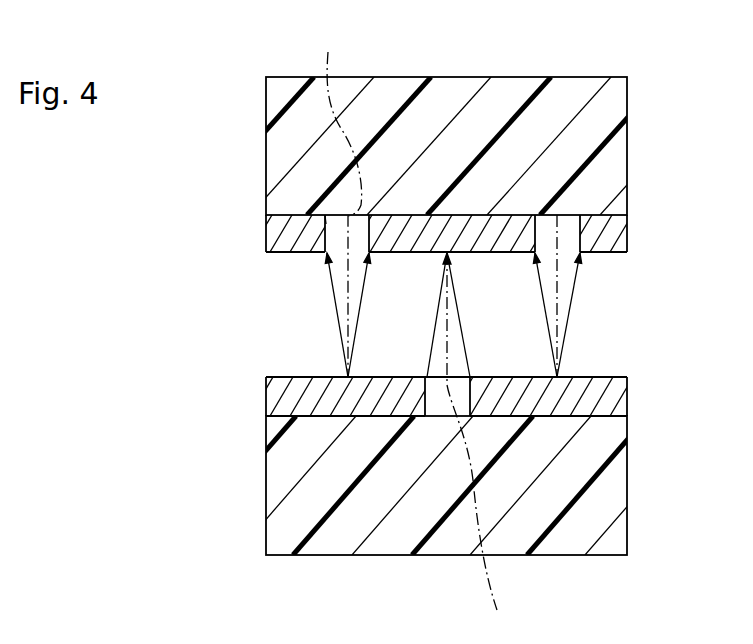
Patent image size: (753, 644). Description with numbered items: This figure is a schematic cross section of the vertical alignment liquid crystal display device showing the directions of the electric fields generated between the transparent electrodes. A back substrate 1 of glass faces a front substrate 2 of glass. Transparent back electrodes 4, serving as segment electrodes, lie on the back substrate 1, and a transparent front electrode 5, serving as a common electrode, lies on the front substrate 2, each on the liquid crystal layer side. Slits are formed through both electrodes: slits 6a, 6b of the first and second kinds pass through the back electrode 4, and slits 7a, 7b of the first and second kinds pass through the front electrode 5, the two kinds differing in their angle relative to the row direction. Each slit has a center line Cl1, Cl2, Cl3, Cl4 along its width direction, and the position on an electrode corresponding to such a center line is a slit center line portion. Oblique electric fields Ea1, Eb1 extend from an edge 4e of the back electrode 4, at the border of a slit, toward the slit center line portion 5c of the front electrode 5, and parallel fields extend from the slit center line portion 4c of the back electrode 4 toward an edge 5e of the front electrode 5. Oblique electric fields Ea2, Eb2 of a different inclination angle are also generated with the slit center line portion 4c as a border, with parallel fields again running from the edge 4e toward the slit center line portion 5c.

The back substrate 1 is at (613, 470).
The front substrate 2 is at (617, 150).
The transparent back electrode 4 is at (620, 402).
The transparent front electrode 5 is at (620, 237).
The slit center line portion of the back electrode 4c is at (348, 377).
The edge of the back electrode 4e is at (426, 414).
The slit center line portion of the front electrode 5c is at (447, 253).
The edge of the front electrode 5e is at (324, 220).
The slit of the first kind 6a is at (436, 405).
The slit of the second kind 6b is at (446, 589).
The slit of the first kind 7a is at (337, 238).
The slit of the second kind 7b is at (465, 279).
The center line Cl1 is at (501, 448).
The center line Cl2 is at (412, 200).
The center line Cl3 is at (528, 628).
The center line Cl4 is at (439, 200).
The oblique electric field Ea1 is at (486, 315).
The oblique electric field Ea2 is at (416, 315).
The oblique electric field Eb1 is at (494, 354).
The oblique electric field Eb2 is at (408, 354).